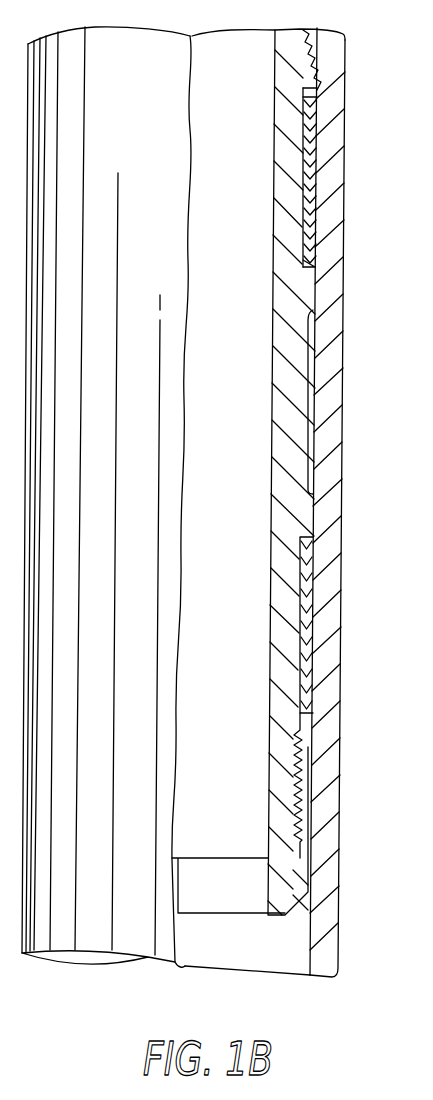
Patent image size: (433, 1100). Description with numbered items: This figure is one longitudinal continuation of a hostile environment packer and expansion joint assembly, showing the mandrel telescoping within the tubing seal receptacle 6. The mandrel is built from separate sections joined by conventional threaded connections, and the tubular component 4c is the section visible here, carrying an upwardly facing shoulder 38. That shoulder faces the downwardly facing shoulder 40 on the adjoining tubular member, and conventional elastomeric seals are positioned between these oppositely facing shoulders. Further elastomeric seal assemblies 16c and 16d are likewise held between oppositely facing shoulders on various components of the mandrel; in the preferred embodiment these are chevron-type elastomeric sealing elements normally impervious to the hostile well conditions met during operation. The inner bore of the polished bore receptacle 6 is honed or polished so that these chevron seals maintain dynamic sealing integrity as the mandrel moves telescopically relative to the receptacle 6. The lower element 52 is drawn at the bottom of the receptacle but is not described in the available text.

The mandrel section 4c is at (283, 73).
The tubing seal receptacle 6 is at (343, 370).
The downwardly facing shoulder 40 is at (318, 97).
The elastomeric seal assembly 16c is at (312, 181).
The upwardly facing shoulder 38 is at (307, 265).
The elastomeric seal assembly 16d is at (312, 649).
The lower coupling member 52 is at (297, 874).